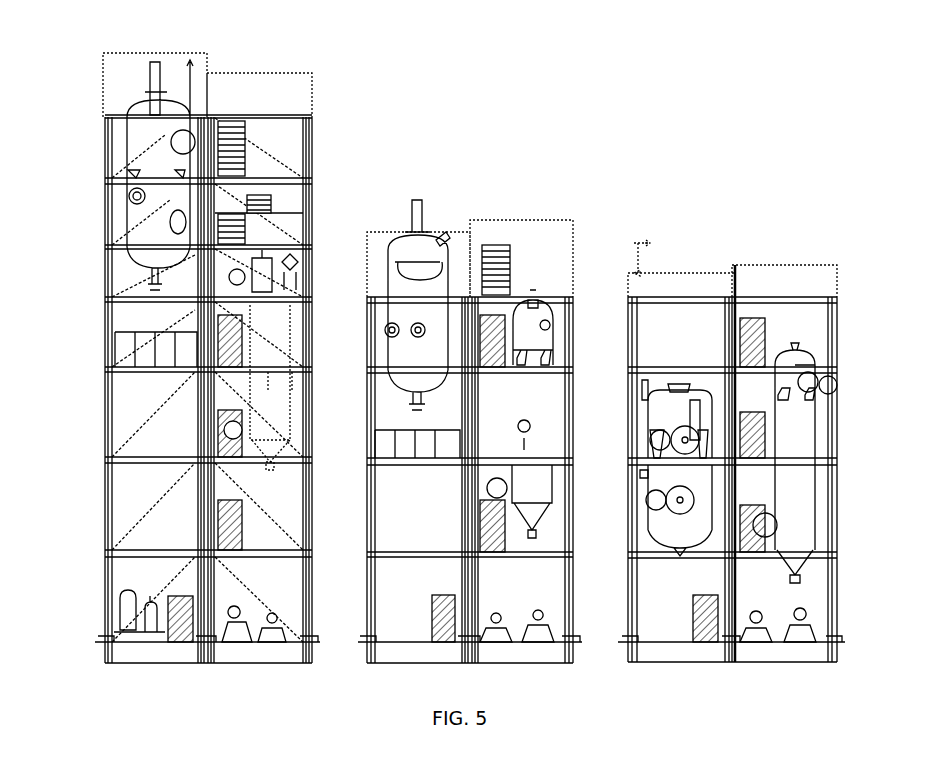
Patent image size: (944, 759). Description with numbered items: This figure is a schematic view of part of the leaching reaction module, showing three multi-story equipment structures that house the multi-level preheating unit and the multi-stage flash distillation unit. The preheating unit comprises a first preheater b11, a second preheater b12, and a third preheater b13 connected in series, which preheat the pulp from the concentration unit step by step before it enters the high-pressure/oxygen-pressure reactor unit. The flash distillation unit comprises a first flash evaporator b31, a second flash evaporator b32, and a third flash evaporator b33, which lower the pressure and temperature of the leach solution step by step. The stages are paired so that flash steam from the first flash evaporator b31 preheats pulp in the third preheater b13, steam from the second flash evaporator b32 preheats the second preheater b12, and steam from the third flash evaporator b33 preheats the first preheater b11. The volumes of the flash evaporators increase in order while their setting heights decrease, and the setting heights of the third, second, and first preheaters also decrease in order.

The first flash evaporator b31 is at (130, 140).
The first preheater b11 is at (290, 264).
The second flash evaporator b32 is at (428, 250).
The second preheater b12 is at (553, 298).
The third flash evaporator b33 is at (707, 397).
The third preheater b13 is at (808, 425).